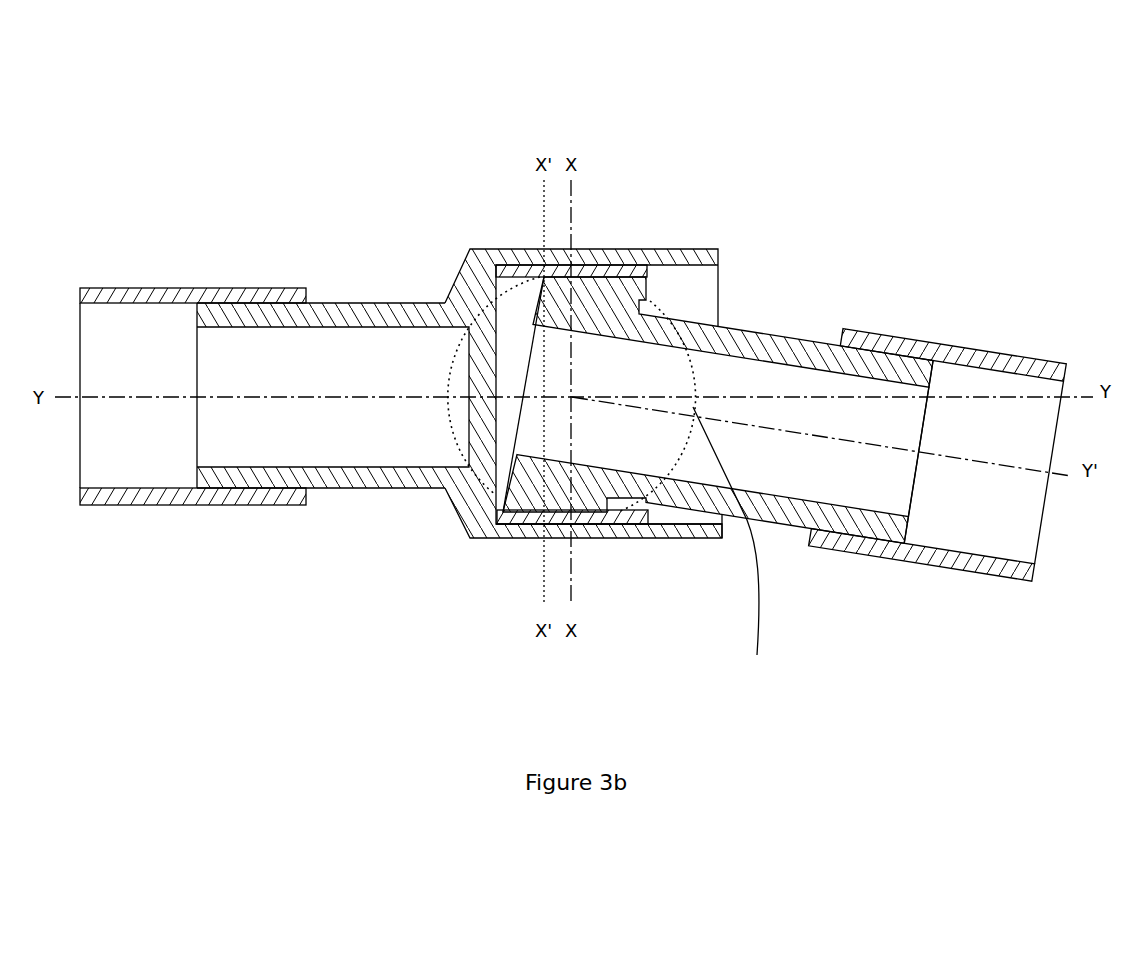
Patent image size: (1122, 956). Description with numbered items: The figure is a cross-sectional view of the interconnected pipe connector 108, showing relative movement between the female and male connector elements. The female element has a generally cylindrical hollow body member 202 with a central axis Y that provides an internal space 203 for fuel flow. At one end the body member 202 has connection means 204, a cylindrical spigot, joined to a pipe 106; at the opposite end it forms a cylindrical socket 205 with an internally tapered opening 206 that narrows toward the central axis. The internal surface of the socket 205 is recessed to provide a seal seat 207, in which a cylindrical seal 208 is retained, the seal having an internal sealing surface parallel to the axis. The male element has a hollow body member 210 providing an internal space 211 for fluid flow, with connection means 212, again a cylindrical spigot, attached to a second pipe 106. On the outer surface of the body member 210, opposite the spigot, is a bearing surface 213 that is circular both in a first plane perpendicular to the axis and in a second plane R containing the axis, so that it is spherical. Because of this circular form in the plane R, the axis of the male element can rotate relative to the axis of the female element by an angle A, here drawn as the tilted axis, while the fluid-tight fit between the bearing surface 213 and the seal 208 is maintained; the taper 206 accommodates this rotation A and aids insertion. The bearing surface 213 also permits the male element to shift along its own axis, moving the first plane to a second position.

The pipe 106 is at (155, 287).
The angled connector 108 is at (352, 163).
The body member 202 is at (468, 249).
The internal space 203 is at (318, 420).
The connection means 204 is at (357, 302).
The socket 205 is at (592, 248).
The tapered opening 206 is at (682, 525).
The seal seat 207 is at (556, 530).
The seal 208 is at (598, 512).
The body member 210 is at (790, 322).
The internal space 211 is at (893, 477).
The connection means 212 is at (880, 330).
The bearing surface 213 is at (603, 287).
The second plane R is at (695, 358).
The angle of rotation A is at (729, 543).